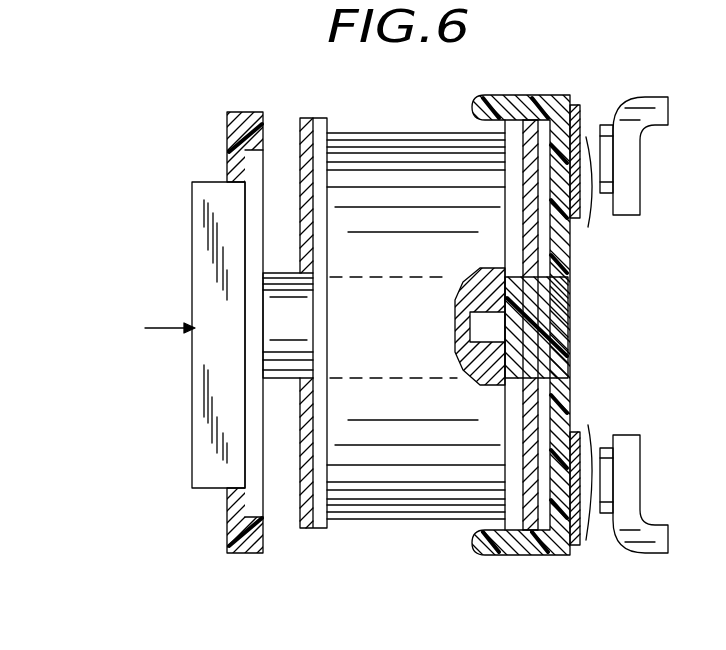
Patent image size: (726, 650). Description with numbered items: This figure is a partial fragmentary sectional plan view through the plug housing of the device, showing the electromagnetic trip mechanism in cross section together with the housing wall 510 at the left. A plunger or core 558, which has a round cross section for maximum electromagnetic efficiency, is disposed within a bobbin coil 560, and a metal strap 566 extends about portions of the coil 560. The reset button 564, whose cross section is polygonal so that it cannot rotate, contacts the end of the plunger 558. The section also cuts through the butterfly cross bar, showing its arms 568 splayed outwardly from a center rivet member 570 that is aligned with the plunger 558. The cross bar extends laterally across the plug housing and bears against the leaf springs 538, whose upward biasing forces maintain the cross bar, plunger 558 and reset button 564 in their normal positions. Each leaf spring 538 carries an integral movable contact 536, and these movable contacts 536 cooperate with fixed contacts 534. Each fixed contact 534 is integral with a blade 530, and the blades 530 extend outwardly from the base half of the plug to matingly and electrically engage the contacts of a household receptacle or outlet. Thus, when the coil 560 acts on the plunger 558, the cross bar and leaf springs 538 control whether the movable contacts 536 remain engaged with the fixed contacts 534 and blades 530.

The housing 510 is at (230, 523).
The blade 530 is at (658, 127).
The fixed contact 534 is at (604, 124).
The movable contact 536 is at (592, 210).
The leaf spring 538 is at (576, 104).
The plunger 558 is at (280, 357).
The bobbin coil 560 is at (421, 470).
The reset button 564 is at (198, 264).
The metal strap 566 is at (304, 528).
The arm 568 is at (534, 99).
The center rivet member 570 is at (558, 300).